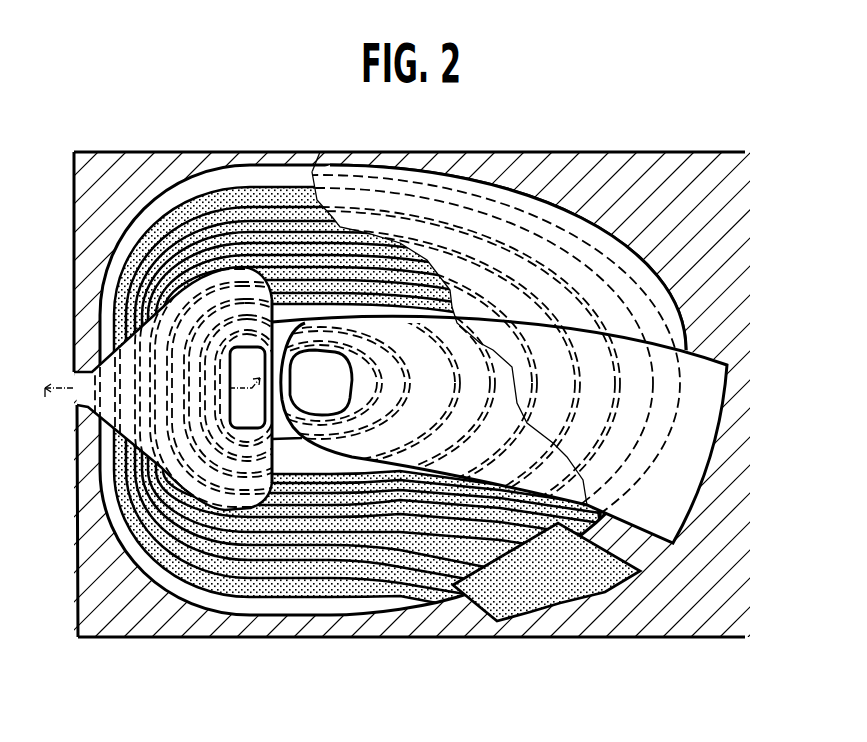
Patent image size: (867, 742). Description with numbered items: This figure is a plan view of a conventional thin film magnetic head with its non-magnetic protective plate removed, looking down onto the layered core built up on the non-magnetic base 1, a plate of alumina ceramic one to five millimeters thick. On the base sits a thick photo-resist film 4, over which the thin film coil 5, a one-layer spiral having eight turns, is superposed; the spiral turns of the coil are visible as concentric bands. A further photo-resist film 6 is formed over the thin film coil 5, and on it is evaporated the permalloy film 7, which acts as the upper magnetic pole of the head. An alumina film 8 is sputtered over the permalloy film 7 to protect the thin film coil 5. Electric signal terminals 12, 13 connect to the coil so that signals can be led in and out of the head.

The non-magnetic base substance 1 is at (193, 630).
The thick photo-resist film 4 is at (246, 167).
The thin film coil 5 is at (313, 590).
The photo-resist film 6 is at (386, 368).
The permalloy film 7 is at (245, 335).
The alumina film 8 is at (430, 178).
The electric signal terminal 12 is at (717, 420).
The electric signal terminal 13 is at (598, 596).